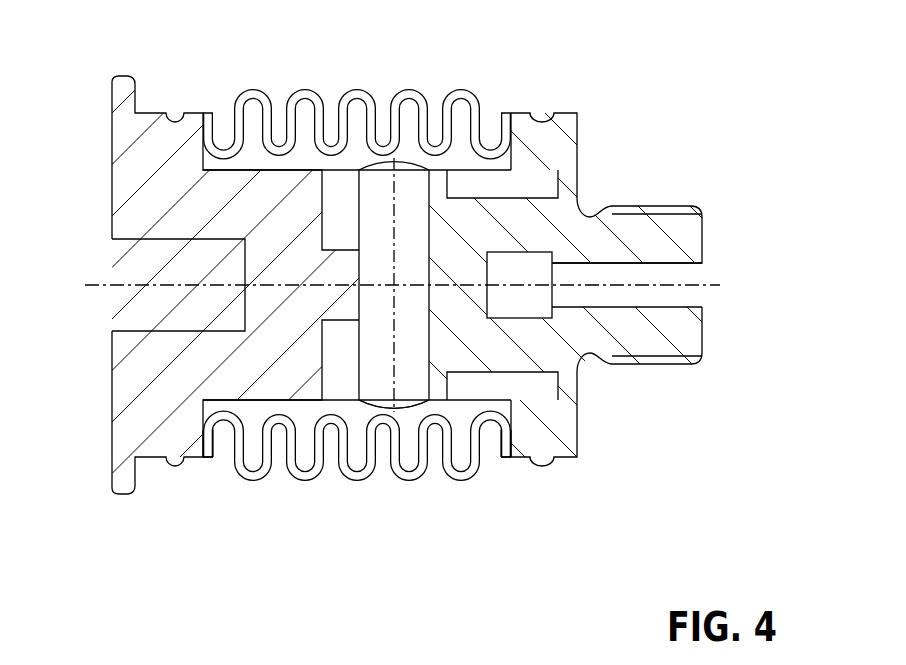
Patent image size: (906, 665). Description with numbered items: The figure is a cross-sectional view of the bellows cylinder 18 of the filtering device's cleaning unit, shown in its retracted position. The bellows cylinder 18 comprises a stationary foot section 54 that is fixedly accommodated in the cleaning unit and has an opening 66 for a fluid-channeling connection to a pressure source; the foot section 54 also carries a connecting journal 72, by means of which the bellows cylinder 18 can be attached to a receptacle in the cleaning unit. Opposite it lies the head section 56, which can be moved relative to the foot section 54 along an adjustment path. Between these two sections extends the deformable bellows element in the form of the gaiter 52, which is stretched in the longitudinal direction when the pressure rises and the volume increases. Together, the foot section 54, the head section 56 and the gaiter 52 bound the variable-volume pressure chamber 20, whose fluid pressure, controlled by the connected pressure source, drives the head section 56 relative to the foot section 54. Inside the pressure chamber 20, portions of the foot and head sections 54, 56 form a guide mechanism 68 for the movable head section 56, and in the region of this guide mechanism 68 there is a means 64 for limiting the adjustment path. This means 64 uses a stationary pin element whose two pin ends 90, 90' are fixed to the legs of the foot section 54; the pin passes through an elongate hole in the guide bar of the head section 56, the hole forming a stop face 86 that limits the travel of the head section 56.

The bellows cylinder 18 is at (142, 558).
The pressure chamber 20 is at (409, 446).
The gaiter 52 is at (357, 478).
The foot section 54 is at (574, 355).
The head section 56 is at (180, 440).
The means for limiting the adjustment path 64 is at (437, 213).
The opening 66 is at (680, 295).
The guide mechanism 68 is at (477, 343).
The connecting journal 72 is at (638, 233).
The stop face 86 is at (482, 272).
The pin end 90 is at (408, 230).
The pin end 90' is at (448, 463).